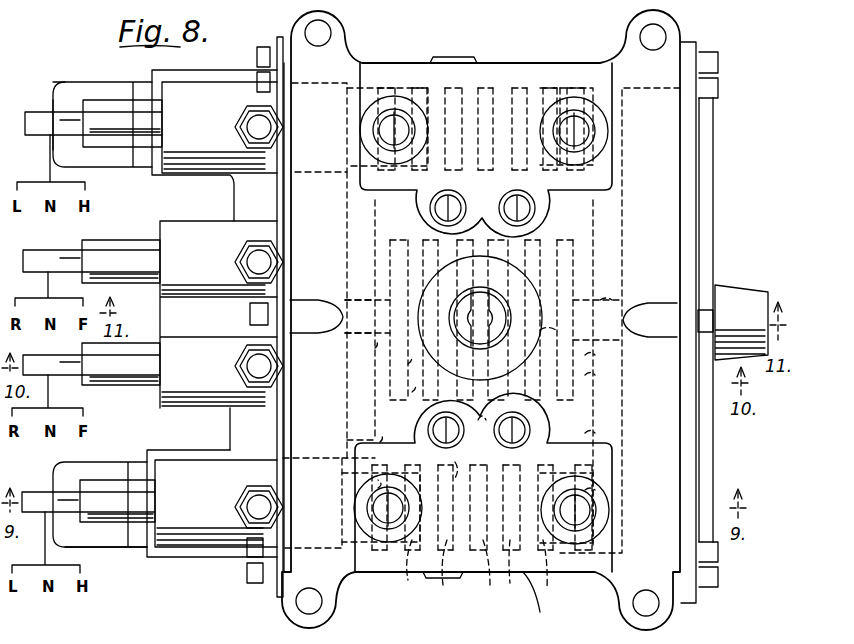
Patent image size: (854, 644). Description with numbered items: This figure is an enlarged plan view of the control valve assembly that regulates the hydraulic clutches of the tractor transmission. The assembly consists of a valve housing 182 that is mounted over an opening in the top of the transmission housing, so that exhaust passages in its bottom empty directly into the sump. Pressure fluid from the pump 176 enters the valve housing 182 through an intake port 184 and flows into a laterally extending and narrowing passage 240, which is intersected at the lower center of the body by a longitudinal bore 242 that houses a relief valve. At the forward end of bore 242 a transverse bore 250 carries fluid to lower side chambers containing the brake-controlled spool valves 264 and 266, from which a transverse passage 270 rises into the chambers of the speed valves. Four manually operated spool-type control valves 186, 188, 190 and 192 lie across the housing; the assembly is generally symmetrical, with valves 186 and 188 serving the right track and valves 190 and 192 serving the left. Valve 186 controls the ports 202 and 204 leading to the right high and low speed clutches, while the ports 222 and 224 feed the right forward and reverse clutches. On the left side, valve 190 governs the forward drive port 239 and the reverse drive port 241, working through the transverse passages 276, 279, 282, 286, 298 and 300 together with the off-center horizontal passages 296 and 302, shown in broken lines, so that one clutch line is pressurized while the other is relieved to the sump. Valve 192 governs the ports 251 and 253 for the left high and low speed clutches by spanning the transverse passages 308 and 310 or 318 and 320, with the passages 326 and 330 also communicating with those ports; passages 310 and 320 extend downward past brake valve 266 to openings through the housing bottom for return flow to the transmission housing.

The pump 176 is at (544, 55).
The valve housing 182 is at (538, 602).
The intake port 184 is at (472, 318).
The spool-type control valve 186 is at (135, 120).
The spool-type control valve 188 is at (123, 247).
The spool-type control valve 190 is at (112, 384).
The spool-type control valve 192 is at (105, 490).
The port 202 is at (385, 142).
The port 204 is at (586, 134).
The port 222 is at (440, 196).
The port 224 is at (530, 200).
The port 239 is at (441, 440).
The laterally extending and narrowing passage 240 is at (481, 438).
The port 241 is at (520, 440).
The longitudinal bore 242 is at (615, 308).
The transverse bore 250 is at (458, 470).
The port 251 is at (380, 512).
The port 253 is at (586, 514).
The brake-controlled spool valve 264 is at (101, 74).
The brake-controlled spool valve 266 is at (100, 550).
The transverse passage 270 is at (486, 575).
The transverse passage 276 is at (412, 392).
The transverse passage 279 is at (410, 364).
The transverse passage 282 is at (545, 330).
The transverse passage 286 is at (590, 357).
The horizontal passage 296 is at (382, 442).
The transverse passage 298 is at (375, 350).
The transverse passage 300 is at (590, 377).
The horizontal passage 302 is at (585, 431).
The transverse passage 308 is at (446, 581).
The transverse passage 310 is at (402, 575).
The transverse passage 318 is at (508, 583).
The transverse passage 320 is at (562, 578).
The transverse passage 326 is at (378, 488).
The transverse passage 330 is at (588, 491).